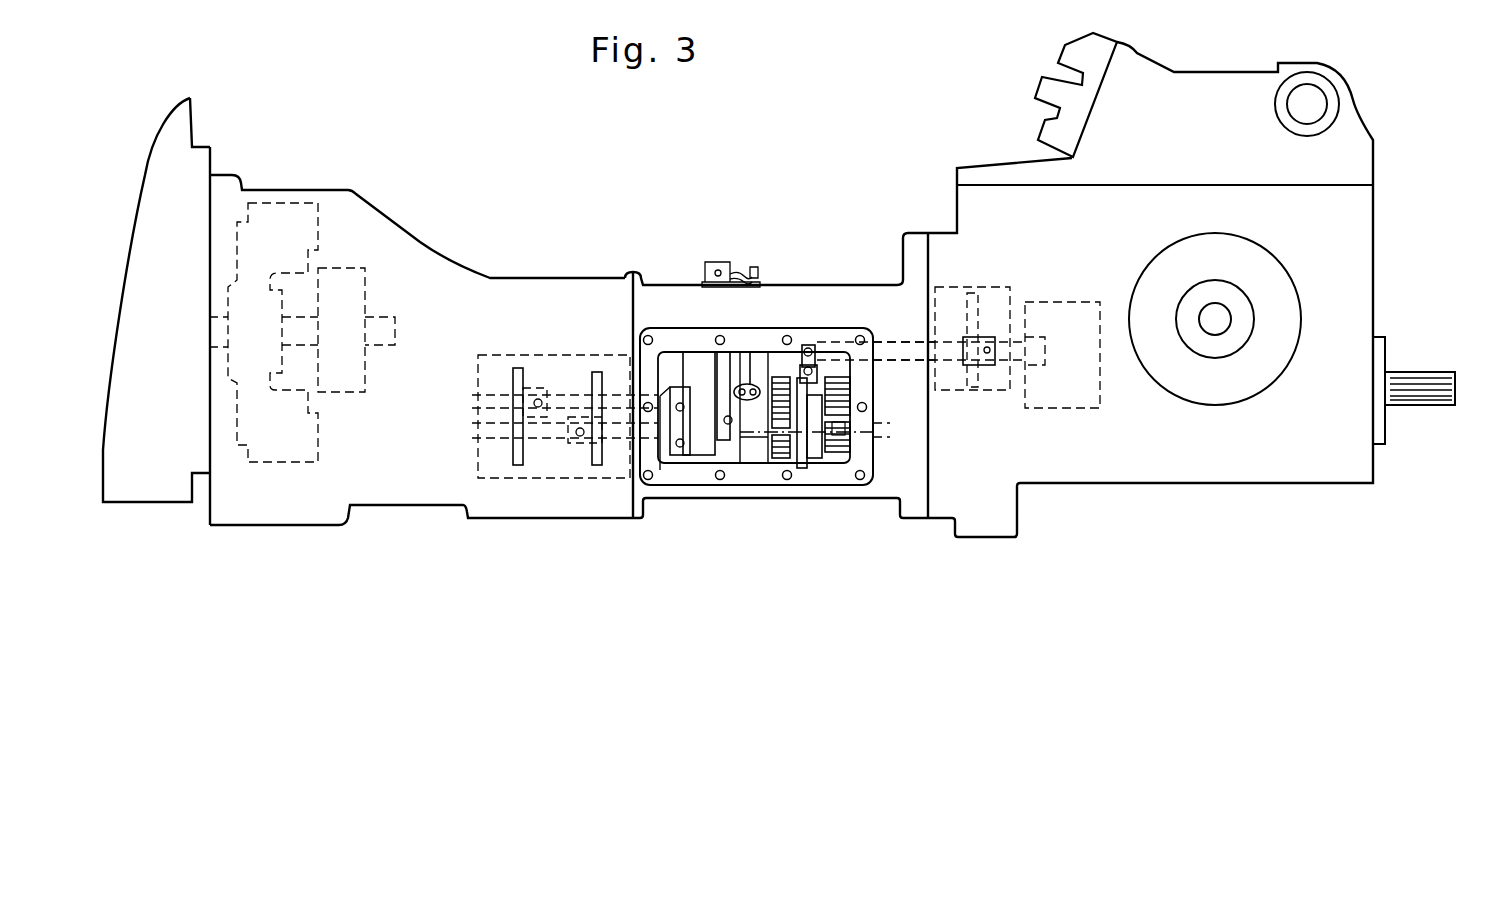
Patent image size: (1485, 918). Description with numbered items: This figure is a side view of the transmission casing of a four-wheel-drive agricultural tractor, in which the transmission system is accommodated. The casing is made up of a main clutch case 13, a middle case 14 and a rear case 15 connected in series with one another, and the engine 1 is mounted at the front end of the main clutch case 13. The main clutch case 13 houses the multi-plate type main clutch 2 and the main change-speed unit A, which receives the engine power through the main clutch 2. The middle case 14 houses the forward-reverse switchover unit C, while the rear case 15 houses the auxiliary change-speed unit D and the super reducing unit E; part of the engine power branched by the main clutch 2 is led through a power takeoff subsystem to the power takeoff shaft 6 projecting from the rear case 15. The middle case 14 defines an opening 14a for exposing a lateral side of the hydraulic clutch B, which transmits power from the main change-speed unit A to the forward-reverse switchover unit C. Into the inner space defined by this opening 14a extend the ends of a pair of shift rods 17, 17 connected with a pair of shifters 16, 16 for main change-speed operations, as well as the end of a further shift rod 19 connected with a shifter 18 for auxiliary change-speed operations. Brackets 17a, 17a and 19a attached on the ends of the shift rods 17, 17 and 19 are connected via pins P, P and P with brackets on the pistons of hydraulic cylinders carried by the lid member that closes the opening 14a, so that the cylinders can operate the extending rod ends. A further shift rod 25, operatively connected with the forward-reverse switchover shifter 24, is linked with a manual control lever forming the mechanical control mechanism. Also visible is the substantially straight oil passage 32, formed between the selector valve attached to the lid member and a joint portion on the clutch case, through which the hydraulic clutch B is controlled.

The engine 1 is at (185, 128).
The main clutch 2 is at (352, 393).
The main clutch case 13 is at (408, 232).
The middle case 14 is at (878, 285).
The opening 14a is at (653, 360).
The rear case 15 is at (1199, 483).
The shifter 16 is at (517, 453).
The shift rod 17 is at (562, 397).
The bracket 17a is at (675, 441).
The shifter 18 is at (975, 378).
The shift rod 19 is at (902, 343).
The bracket 19a is at (802, 343).
The forward-reverse switchover shifter 24 is at (815, 457).
The shift rod 25 is at (884, 432).
The oil passage 32 is at (745, 386).
The power takeoff shaft 6 is at (1435, 372).
The main change-speed unit A is at (488, 353).
The hydraulic clutch B is at (695, 355).
The forward-reverse switchover unit C is at (781, 463).
The auxiliary change-speed unit D is at (995, 287).
The super reducing unit E is at (1077, 302).
The pin P is at (812, 371).